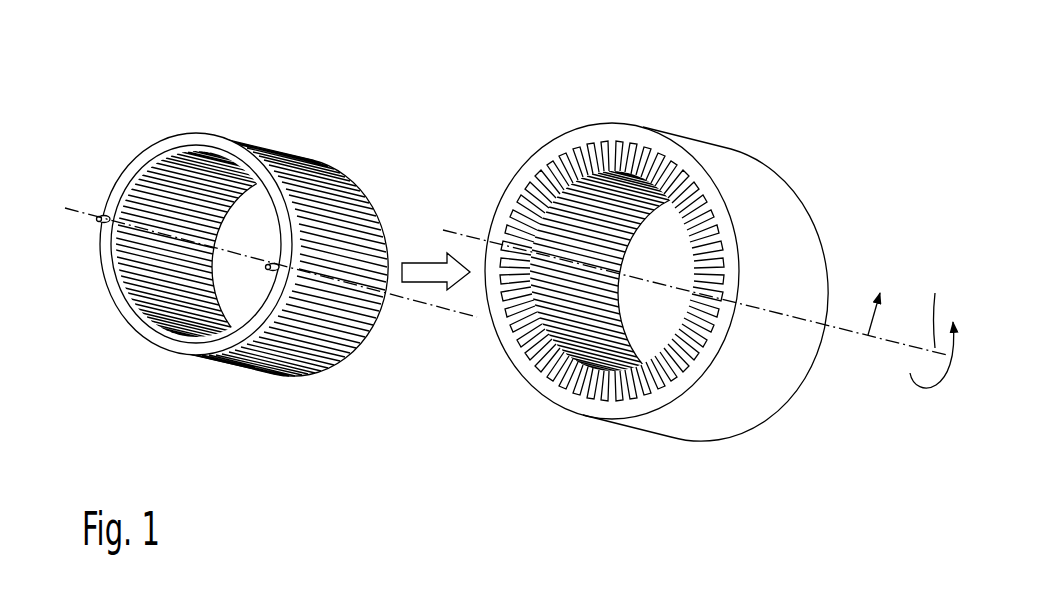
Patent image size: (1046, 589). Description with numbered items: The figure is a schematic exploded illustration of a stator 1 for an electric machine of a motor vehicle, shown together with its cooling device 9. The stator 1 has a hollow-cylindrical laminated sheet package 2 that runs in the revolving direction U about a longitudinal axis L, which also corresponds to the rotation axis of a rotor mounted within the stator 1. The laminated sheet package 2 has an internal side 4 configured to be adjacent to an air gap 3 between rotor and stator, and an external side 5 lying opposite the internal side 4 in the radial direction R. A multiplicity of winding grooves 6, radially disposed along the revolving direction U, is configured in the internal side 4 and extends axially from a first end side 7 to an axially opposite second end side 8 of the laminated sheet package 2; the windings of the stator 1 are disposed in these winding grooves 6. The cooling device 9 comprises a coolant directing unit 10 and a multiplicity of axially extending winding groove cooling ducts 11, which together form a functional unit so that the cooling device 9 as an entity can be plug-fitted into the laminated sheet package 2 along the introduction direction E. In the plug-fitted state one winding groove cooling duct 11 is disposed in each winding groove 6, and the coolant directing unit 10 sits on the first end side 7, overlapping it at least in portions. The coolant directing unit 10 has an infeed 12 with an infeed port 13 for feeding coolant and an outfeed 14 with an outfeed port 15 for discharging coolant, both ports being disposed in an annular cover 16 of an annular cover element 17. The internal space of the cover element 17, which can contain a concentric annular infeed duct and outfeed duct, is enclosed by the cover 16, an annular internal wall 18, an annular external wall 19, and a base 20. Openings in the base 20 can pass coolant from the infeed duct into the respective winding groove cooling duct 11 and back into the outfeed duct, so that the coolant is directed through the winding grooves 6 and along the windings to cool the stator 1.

The stator 1 is at (695, 234).
The laminated sheet package 2 is at (695, 133).
The air gap 3 is at (567, 381).
The internal side 4 is at (598, 307).
The external side 5 is at (760, 197).
The winding grooves 6 is at (597, 150).
The first end side 7 is at (631, 271).
The second end side 8 is at (833, 253).
The cooling device 9 is at (259, 236).
The coolant directing unit 10 is at (280, 270).
The winding groove cooling ducts 11 is at (381, 217).
The infeed 12 is at (75, 211).
The infeed port 13 is at (103, 226).
The outfeed 14 is at (260, 276).
The outfeed port 15 is at (270, 273).
The annular cover 16 is at (173, 243).
The annular cover element 17 is at (177, 147).
The annular internal wall 18 is at (120, 289).
The annular external wall 19 is at (300, 176).
The base 20 is at (165, 186).
The introduction direction E is at (430, 274).
The longitudinal axis L is at (935, 305).
The radial direction R is at (874, 321).
The revolving direction U is at (920, 386).